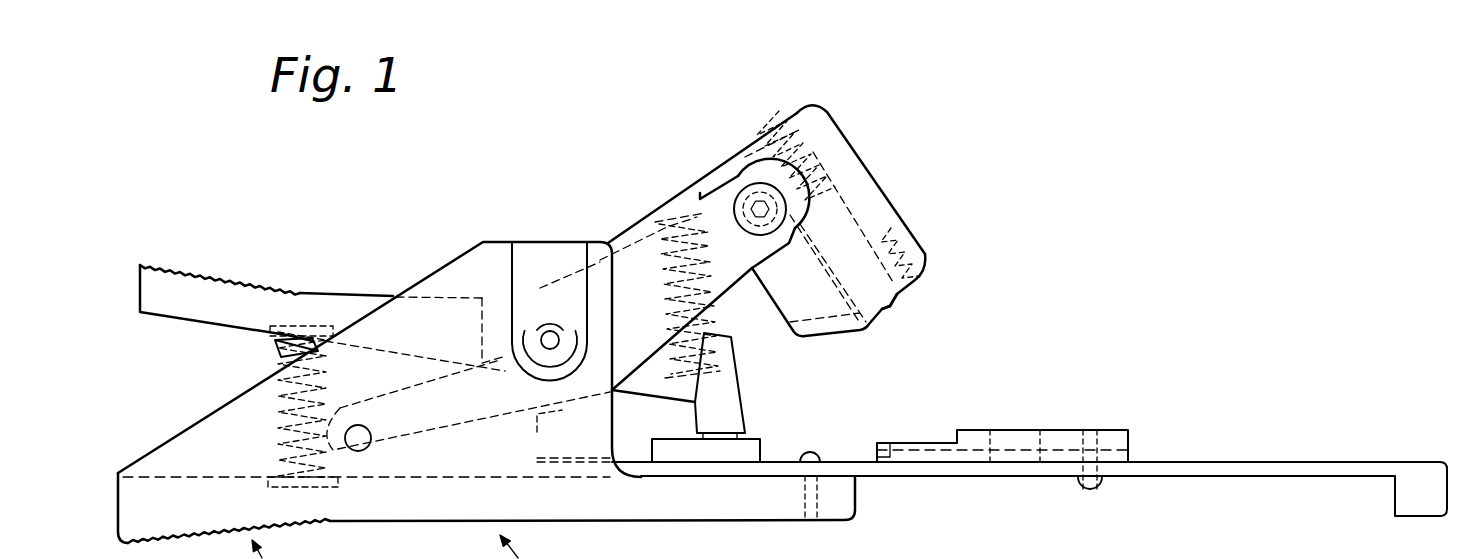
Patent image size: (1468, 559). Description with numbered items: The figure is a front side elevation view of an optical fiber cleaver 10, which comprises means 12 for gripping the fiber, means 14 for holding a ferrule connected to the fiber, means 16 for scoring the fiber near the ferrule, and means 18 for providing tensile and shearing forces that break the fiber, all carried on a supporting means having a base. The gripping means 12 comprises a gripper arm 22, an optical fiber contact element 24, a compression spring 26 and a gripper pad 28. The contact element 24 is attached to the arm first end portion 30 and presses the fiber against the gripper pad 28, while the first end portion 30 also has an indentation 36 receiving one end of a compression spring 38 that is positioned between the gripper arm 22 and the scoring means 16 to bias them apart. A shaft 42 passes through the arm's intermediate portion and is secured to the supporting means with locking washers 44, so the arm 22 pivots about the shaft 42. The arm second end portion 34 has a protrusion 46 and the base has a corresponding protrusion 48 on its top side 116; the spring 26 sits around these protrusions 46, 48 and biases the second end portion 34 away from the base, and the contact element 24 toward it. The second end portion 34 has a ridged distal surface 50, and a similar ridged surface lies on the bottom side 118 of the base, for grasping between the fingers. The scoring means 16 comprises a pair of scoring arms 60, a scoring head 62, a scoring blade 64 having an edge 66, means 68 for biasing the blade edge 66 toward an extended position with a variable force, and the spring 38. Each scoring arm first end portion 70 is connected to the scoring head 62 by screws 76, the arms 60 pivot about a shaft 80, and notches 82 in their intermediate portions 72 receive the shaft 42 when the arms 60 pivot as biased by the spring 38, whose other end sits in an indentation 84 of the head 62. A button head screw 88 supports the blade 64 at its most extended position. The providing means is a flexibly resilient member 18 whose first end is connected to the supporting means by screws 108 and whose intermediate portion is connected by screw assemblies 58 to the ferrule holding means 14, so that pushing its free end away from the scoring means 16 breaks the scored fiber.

The optical fiber cleaver 10 is at (1082, 156).
The means for gripping the fiber 12 is at (766, 397).
The means for holding a ferrule 14 is at (1090, 413).
The means for scoring the fiber 16 is at (882, 126).
The flexibly resilient member 18 is at (1300, 445).
The gripper arm 22 is at (373, 293).
The optical fiber contact element 24 is at (745, 435).
The compression spring 26 is at (273, 345).
The gripper pad 28 is at (652, 442).
The first end portion 30 is at (697, 415).
The second end portion 34 is at (212, 312).
The indentation 36 is at (718, 357).
The compression spring 38 is at (688, 279).
The shaft 42 is at (547, 320).
The locking washers 44 is at (545, 372).
The protrusion 46 is at (320, 352).
The protrusion 48 is at (320, 457).
The distal surface 50 is at (211, 254).
The screw assemblies 58 is at (1098, 490).
The scoring arms 60 is at (580, 263).
The scoring head 62 is at (872, 168).
The scoring blade 64 is at (905, 297).
The edge 66 is at (897, 306).
The means for biasing the scoring blade edge 68 is at (769, 107).
The first end portion 70 is at (738, 185).
The intermediate portion 72 is at (540, 420).
The screws 76 is at (745, 170).
The shaft 80 is at (372, 433).
The notches 82 is at (523, 327).
The indentation 84 is at (662, 240).
The button head screw 88 is at (920, 250).
The screws 108 is at (818, 452).
The top side 116 is at (160, 473).
The bottom side 118 is at (685, 527).